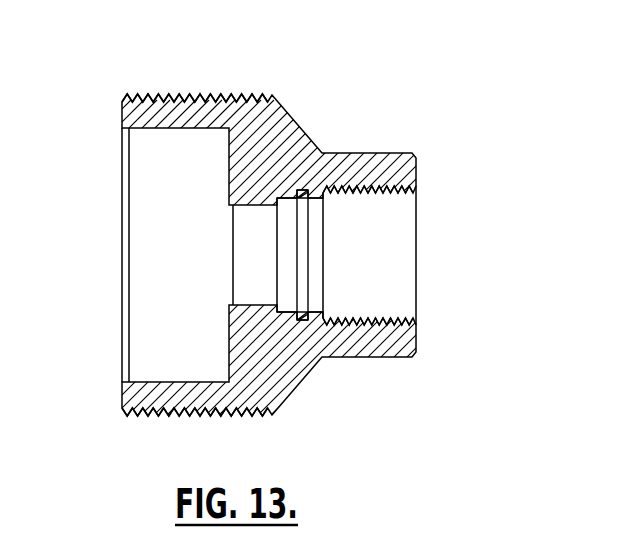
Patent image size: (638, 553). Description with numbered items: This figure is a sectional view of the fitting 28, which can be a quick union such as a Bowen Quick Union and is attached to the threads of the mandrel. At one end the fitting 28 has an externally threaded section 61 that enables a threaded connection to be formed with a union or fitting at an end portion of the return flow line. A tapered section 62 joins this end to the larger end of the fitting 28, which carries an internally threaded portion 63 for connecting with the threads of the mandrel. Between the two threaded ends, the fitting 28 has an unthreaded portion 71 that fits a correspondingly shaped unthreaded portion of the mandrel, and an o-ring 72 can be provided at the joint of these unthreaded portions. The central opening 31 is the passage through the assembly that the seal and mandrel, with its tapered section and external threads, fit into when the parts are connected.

The fitting 28 is at (296, 124).
The externally threaded section 61 is at (183, 95).
The tapered section 62 is at (295, 388).
The internally threaded portion 63 is at (383, 194).
The central opening 31 is at (158, 335).
The unthreaded portion 71 is at (286, 312).
The o-ring 72 is at (304, 201).